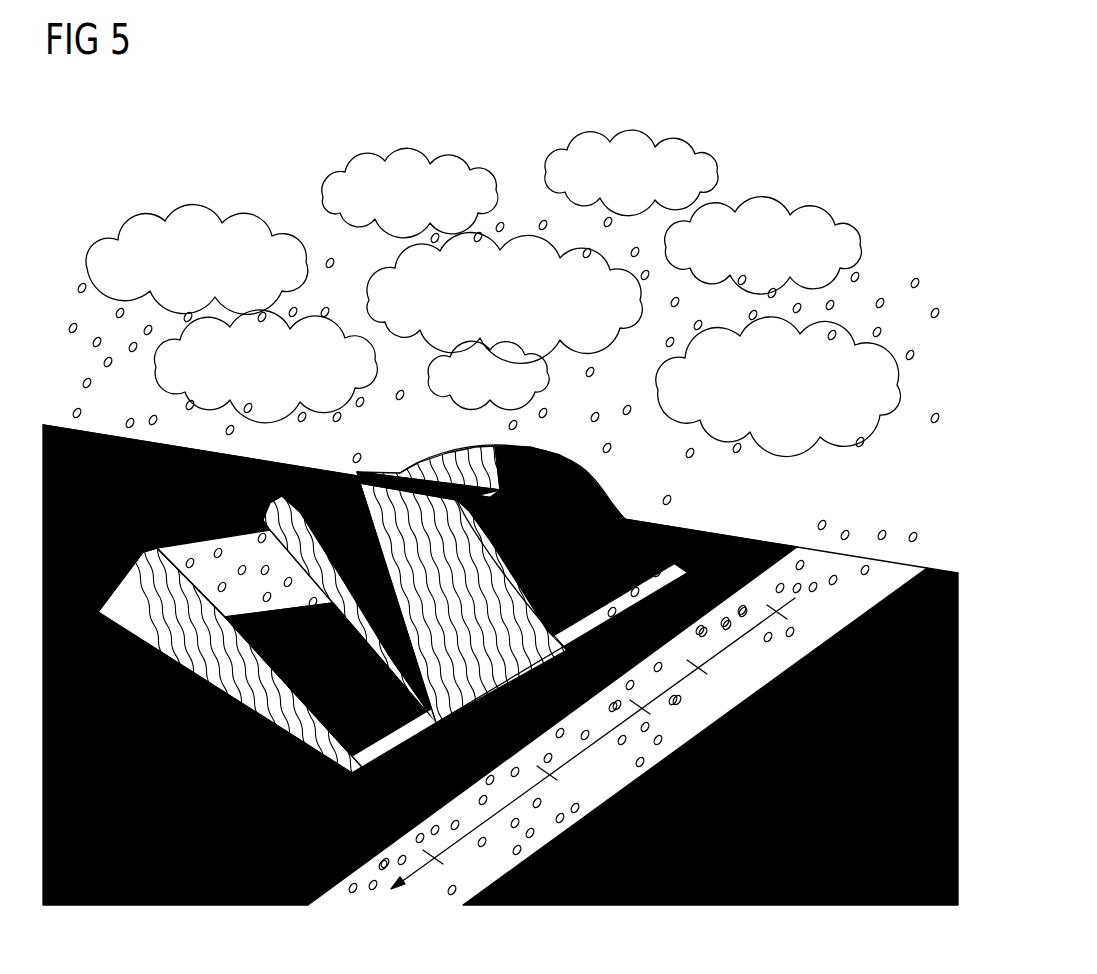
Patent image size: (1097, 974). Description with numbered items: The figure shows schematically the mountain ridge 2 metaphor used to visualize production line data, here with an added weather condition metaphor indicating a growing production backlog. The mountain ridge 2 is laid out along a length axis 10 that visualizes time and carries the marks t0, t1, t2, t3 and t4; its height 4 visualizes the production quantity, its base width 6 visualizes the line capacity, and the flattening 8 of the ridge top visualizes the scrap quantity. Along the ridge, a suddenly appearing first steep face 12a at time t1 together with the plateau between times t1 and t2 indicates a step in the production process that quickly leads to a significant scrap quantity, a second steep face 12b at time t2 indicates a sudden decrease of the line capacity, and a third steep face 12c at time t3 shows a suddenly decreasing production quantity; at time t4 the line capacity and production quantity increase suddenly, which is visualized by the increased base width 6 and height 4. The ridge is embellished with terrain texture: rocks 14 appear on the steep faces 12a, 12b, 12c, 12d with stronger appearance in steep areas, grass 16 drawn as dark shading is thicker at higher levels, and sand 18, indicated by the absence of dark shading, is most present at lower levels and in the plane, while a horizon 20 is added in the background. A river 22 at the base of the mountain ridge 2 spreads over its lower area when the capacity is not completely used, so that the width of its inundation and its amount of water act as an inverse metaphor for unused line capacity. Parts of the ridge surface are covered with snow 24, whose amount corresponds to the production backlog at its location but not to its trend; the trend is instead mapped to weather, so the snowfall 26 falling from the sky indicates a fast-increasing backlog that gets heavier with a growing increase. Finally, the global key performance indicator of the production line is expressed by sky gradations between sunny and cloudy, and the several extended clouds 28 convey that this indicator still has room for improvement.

The mountain ridge 2 is at (200, 170).
The height 4 is at (710, 672).
The base width 6 is at (207, 702).
The flattening 8 is at (405, 450).
The length axis 10 is at (420, 877).
The first steep face 12a is at (522, 559).
The second steep face 12b is at (543, 657).
The third steep face 12c is at (253, 497).
The steep face 12d is at (120, 583).
The rocks 14 is at (110, 603).
The grass 16 is at (610, 497).
The sand 18 is at (380, 750).
The horizon 20 is at (93, 430).
The river 22 is at (202, 898).
The snow 24 is at (203, 547).
The snowfall 26 is at (862, 275).
The extended clouds 28 is at (717, 160).
The time t0 is at (782, 613).
The time t1 is at (702, 668).
The time t2 is at (645, 708).
The time t3 is at (552, 774).
The time t4 is at (438, 858).